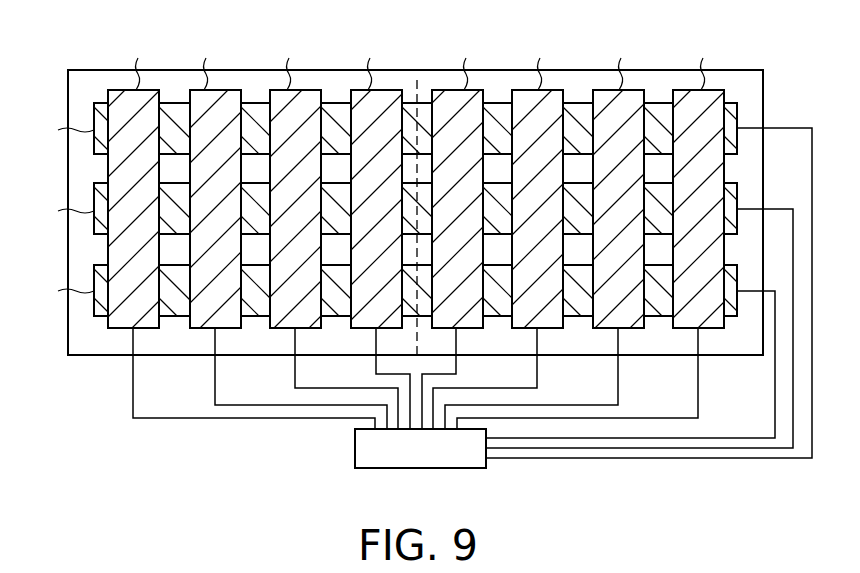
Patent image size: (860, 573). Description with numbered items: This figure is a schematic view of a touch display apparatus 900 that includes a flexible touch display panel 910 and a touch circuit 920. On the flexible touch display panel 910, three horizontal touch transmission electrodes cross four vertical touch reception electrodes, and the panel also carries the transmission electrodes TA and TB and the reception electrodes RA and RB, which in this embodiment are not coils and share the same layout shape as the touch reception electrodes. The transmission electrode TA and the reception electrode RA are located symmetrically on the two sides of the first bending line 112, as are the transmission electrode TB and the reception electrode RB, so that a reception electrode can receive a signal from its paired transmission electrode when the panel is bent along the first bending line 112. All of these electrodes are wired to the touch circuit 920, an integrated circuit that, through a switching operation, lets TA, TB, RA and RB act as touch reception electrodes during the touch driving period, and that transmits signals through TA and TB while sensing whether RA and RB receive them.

The touch display apparatus 900 is at (140, 454).
The flexible touch display panel 910 is at (84, 71).
The first bending line 112 is at (417, 80).
The touch circuit 920 is at (355, 448).